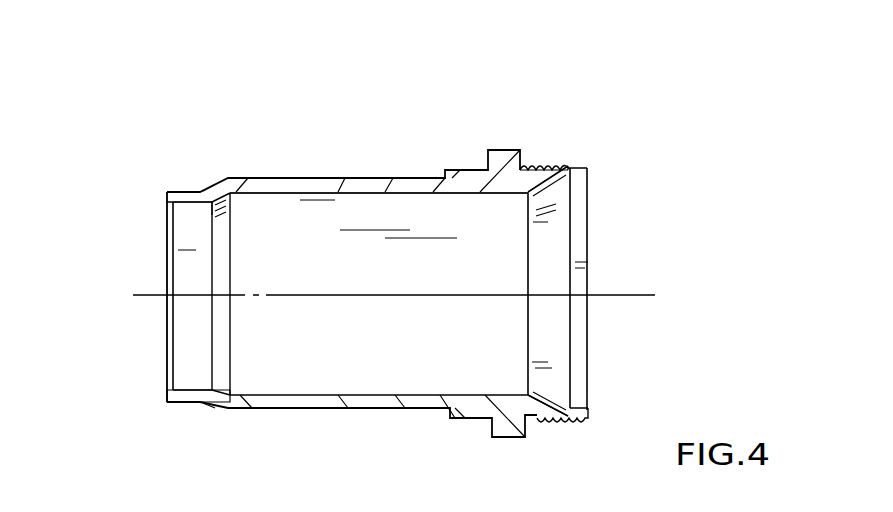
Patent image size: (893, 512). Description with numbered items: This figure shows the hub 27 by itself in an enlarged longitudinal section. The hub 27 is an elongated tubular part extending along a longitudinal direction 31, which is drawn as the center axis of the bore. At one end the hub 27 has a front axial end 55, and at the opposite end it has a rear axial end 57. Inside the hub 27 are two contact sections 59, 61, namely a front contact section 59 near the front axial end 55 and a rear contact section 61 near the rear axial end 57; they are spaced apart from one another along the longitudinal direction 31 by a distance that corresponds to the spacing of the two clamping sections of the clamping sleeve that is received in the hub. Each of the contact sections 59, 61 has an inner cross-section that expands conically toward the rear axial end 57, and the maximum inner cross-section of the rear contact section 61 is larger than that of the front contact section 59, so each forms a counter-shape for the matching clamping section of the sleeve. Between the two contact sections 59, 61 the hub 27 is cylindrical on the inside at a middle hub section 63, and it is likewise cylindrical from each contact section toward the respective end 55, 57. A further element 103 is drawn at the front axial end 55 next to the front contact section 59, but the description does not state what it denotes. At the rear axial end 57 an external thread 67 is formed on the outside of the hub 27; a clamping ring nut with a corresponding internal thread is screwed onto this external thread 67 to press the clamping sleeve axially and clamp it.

The hub 27 is at (148, 132).
The longitudinal direction 31 is at (645, 292).
The front axial end 55 is at (113, 276).
The rear axial end 57 is at (670, 178).
The front contact section 59 is at (223, 390).
The rear contact section 61 is at (553, 393).
The middle hub section 63 is at (367, 195).
The external thread 67 is at (545, 160).
The seal groove 103 is at (190, 203).